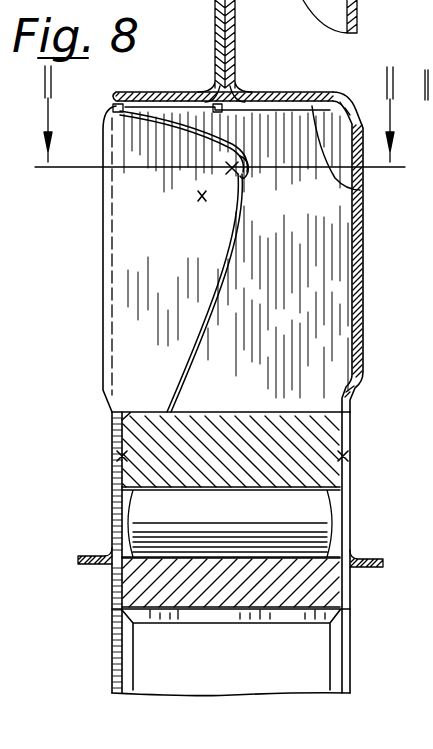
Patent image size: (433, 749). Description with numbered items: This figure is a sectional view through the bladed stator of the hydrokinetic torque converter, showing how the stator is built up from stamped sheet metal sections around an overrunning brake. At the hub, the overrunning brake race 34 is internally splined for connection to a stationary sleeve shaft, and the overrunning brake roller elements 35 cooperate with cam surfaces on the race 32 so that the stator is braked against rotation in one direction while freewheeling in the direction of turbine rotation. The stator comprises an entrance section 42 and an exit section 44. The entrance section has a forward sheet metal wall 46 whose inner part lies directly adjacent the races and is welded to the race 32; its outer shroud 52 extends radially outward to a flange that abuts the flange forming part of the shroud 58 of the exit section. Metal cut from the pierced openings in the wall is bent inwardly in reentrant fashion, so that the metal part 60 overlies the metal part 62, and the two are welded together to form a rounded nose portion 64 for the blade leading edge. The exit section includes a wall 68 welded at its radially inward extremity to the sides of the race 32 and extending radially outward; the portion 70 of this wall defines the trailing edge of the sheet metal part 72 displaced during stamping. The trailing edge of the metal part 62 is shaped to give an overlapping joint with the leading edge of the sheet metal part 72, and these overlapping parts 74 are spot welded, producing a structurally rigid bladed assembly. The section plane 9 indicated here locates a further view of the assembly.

The section line 9- 9 is at (220, 116).
The overrunning brake race 32 is at (135, 468).
The overrunning brake race 34 is at (138, 591).
The overrunning brake roller elements 35 is at (148, 511).
The entrance section 42 is at (178, 92).
The exit section 44 is at (284, 91).
The forward sheet metal wall 46 is at (112, 436).
The outer shroud 52 is at (132, 112).
The shroud 58 is at (360, 190).
The metal part 60 is at (205, 364).
The metal part 62 is at (200, 240).
The rounded nose portion 64 is at (101, 218).
The wall 68 is at (341, 458).
The portion of the wall 70 is at (367, 321).
The sheet metal part 72 is at (305, 282).
The overlapping parts 74 is at (248, 174).